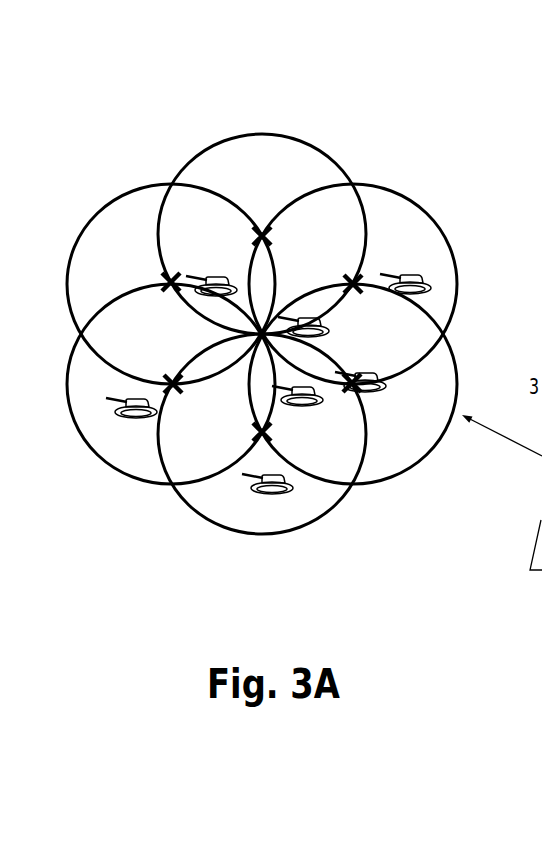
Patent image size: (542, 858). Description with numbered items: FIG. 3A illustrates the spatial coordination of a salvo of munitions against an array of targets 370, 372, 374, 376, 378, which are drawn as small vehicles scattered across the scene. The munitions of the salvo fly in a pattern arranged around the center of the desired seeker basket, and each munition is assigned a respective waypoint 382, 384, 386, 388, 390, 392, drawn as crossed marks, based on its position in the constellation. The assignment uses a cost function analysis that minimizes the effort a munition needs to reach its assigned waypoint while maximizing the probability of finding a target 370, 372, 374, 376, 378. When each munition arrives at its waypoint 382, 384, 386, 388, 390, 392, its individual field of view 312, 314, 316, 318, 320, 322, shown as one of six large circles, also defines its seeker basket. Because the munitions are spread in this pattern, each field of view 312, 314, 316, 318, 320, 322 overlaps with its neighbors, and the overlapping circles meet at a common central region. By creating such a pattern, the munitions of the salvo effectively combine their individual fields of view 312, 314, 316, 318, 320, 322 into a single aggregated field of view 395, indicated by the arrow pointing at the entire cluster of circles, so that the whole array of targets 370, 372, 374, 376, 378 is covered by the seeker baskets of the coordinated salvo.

The field of view 312 is at (261, 227).
The field of view 314 is at (373, 284).
The field of view 316 is at (364, 384).
The field of view 318 is at (262, 442).
The field of view 320 is at (161, 384).
The field of view 322 is at (162, 283).
The target 370 is at (209, 268).
The target 372 is at (404, 267).
The target 374 is at (375, 395).
The target 376 is at (267, 499).
The target 378 is at (131, 430).
The waypoint 382 is at (263, 213).
The waypoint 384 is at (331, 264).
The waypoint 386 is at (374, 363).
The waypoint 388 is at (240, 417).
The waypoint 390 is at (157, 364).
The waypoint 392 is at (149, 262).
The aggregated field of view 395 is at (57, 63).